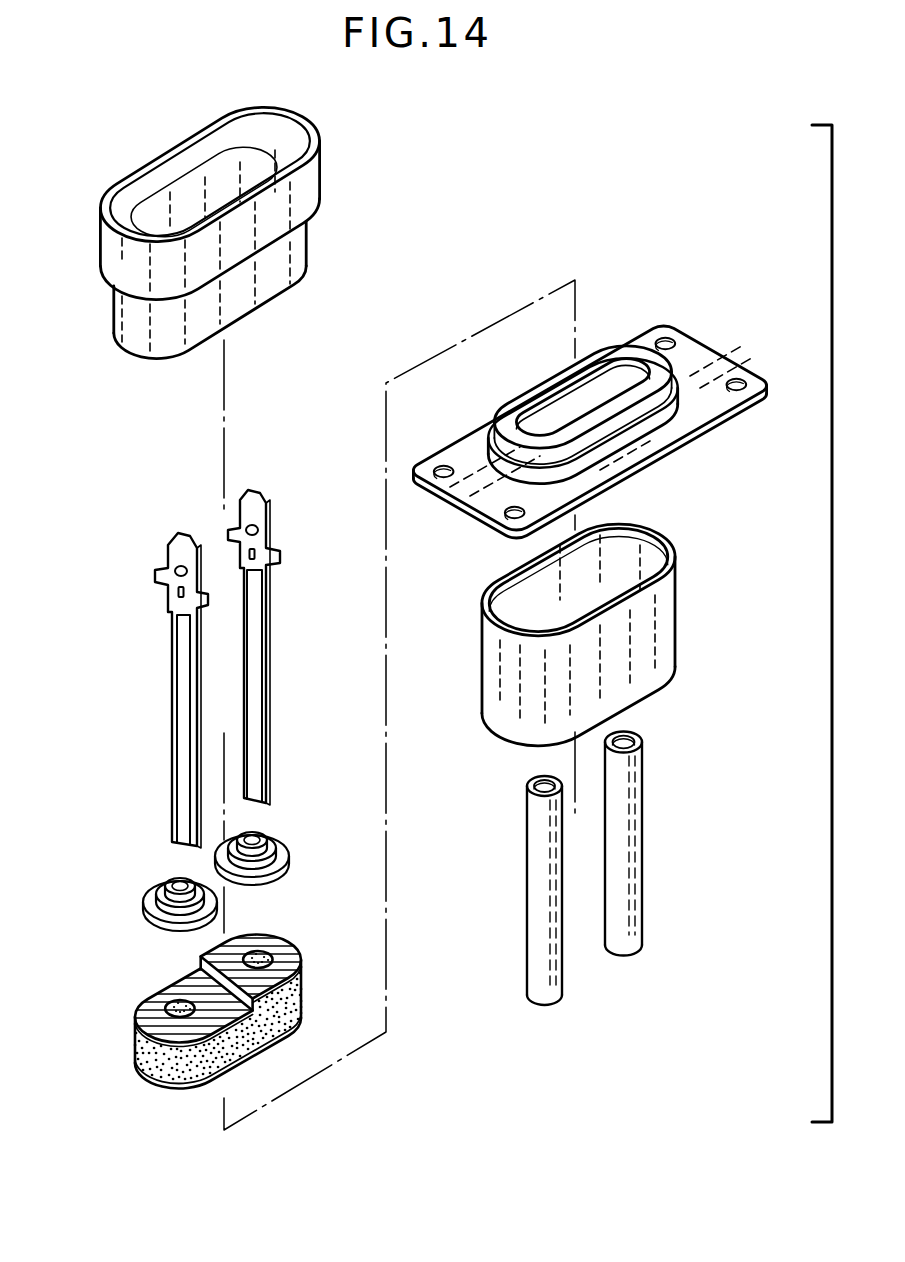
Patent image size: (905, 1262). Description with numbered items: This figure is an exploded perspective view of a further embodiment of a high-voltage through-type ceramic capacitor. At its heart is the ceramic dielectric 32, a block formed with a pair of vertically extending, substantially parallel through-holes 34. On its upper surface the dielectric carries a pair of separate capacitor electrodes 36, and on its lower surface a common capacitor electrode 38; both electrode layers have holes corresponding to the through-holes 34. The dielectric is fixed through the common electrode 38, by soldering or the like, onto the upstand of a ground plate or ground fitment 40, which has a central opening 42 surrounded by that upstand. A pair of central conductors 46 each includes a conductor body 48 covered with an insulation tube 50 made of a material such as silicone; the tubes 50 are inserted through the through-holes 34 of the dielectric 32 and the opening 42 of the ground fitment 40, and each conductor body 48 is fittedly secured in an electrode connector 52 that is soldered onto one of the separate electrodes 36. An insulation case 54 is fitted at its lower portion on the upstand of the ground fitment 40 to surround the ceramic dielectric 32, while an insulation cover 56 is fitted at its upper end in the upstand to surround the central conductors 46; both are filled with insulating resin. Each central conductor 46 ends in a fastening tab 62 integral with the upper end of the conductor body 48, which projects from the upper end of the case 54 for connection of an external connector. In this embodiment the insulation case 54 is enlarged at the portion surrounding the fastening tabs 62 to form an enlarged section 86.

The ceramic dielectric 32 is at (293, 1002).
The through-holes 34 is at (180, 1003).
The capacitor electrodes 36 is at (140, 1007).
The common capacitor electrode 38 is at (253, 1050).
The ground fitment 40 is at (688, 426).
The opening 42 is at (572, 415).
The central conductors 46 is at (166, 707).
The conductor body 48 is at (170, 778).
The insulation tube 50 is at (532, 877).
The electrode connector 52 is at (148, 902).
The insulation case 54 is at (107, 291).
The insulation cover 56 is at (677, 611).
The fastening tab 62 is at (166, 559).
The enlarged section 86 is at (318, 175).